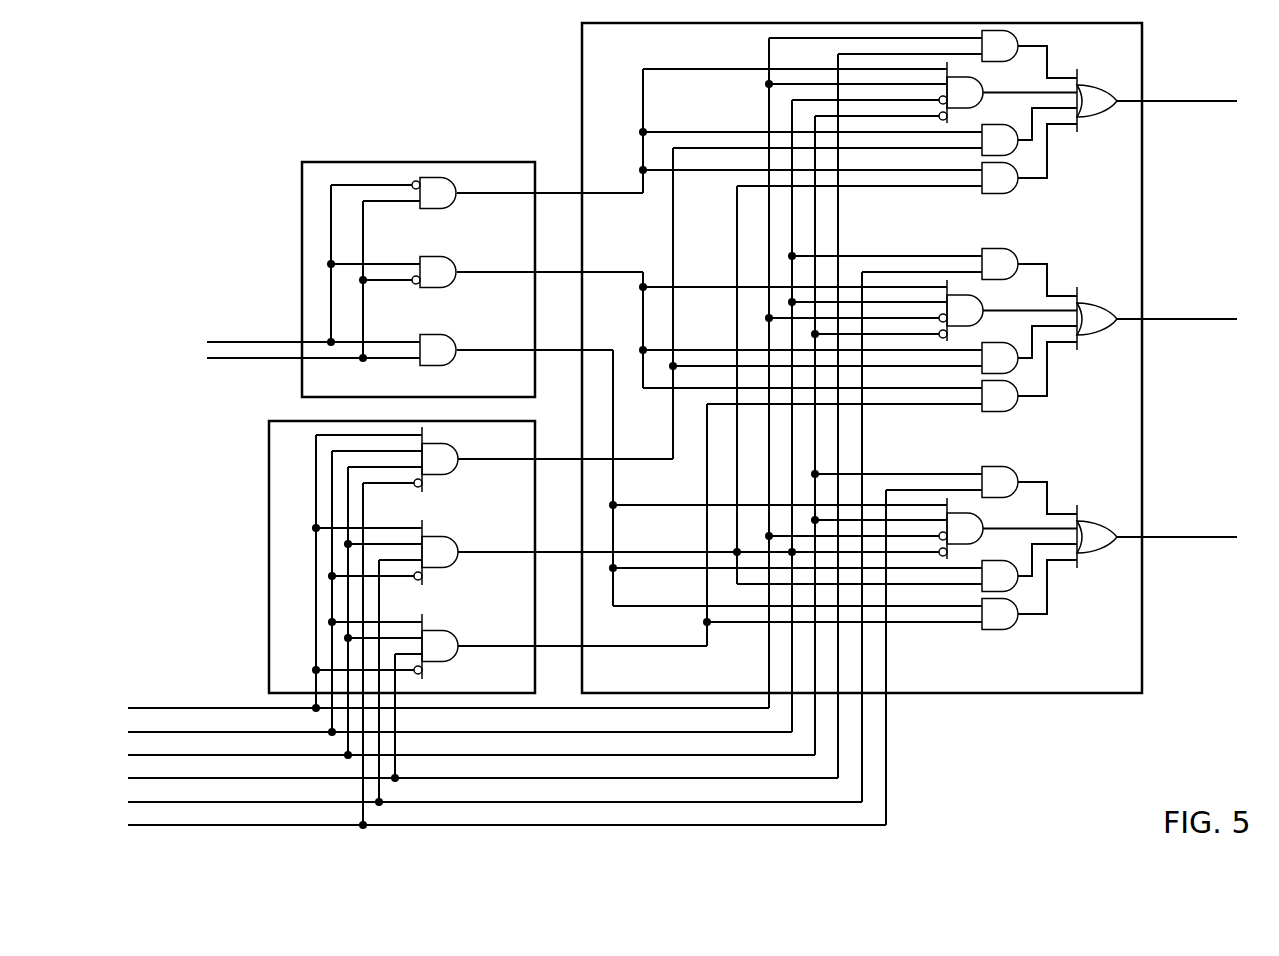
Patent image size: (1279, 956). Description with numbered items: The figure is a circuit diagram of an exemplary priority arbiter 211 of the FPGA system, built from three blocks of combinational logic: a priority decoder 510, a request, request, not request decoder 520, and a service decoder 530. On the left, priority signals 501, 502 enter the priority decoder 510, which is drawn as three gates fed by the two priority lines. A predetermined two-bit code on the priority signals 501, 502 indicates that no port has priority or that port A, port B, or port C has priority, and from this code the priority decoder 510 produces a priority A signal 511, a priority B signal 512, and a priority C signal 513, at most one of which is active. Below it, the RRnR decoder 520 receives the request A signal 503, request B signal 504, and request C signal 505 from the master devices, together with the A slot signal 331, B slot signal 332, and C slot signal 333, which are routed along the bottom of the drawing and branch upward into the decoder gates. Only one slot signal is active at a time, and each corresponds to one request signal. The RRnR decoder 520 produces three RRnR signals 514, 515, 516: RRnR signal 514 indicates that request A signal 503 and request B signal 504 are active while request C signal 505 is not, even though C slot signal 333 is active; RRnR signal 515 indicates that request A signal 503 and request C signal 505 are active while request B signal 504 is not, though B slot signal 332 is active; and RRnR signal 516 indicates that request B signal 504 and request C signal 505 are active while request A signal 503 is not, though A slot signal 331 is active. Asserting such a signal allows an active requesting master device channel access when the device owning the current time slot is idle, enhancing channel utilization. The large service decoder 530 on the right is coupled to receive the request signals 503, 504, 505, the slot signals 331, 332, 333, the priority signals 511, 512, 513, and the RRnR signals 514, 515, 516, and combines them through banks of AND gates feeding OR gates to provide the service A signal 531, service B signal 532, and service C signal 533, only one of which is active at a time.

The priority arbiter 211 is at (254, 40).
The priority signal 501 is at (218, 340).
The priority signal 502 is at (218, 360).
The request A signal 503 is at (203, 712).
The request B signal 504 is at (203, 736).
The request C signal 505 is at (203, 759).
The A slot signal 331 is at (203, 782).
The B slot signal 332 is at (203, 806).
The C slot signal 333 is at (203, 829).
The priority decoder 510 is at (300, 160).
The priority A signal 511 is at (466, 199).
The priority B signal 512 is at (466, 277).
The priority C signal 513 is at (466, 355).
The RRnR decoder 520 is at (266, 490).
The RRnR signal 514 is at (466, 465).
The RRnR signal 515 is at (466, 559).
The RRnR signal 516 is at (466, 653).
The service decoder 530 is at (580, 117).
The service A signal 531 is at (1196, 104).
The service B signal 532 is at (1093, 330).
The service C signal 533 is at (1093, 548).